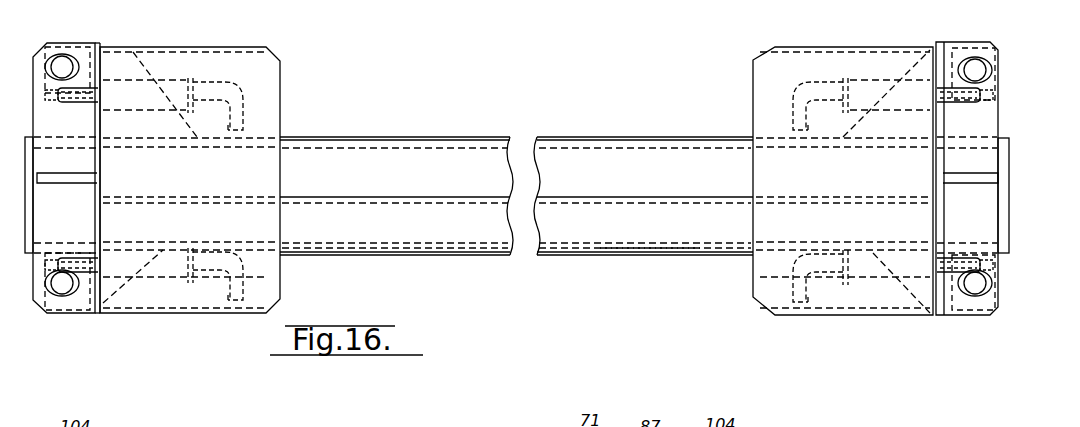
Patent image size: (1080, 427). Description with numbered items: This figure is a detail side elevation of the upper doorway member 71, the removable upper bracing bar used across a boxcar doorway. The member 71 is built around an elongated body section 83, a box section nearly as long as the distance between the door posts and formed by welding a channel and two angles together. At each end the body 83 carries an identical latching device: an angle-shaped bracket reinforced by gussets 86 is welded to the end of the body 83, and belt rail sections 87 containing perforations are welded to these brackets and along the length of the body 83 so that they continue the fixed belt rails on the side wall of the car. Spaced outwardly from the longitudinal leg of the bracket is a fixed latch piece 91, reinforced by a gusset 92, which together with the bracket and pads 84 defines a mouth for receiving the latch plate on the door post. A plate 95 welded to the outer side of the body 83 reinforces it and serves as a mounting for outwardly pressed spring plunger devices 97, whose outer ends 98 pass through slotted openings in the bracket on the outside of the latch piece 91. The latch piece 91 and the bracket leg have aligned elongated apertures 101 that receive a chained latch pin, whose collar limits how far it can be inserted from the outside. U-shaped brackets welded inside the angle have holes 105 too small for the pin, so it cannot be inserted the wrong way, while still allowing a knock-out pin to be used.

The upper doorway member 71 is at (586, 134).
The elongated body section 83 is at (589, 230).
The pads 84 is at (956, 67).
The gussets 86 is at (905, 75).
The belt rail sections 87 is at (1010, 155).
The fixed latch piece 91 is at (1000, 103).
The gusset 92 is at (985, 189).
The plate 95 is at (760, 304).
The spring plunger devices 97 is at (807, 92).
The outer ends 98 is at (975, 100).
The elongated apertures 101 is at (993, 63).
The holes 105 is at (980, 73).